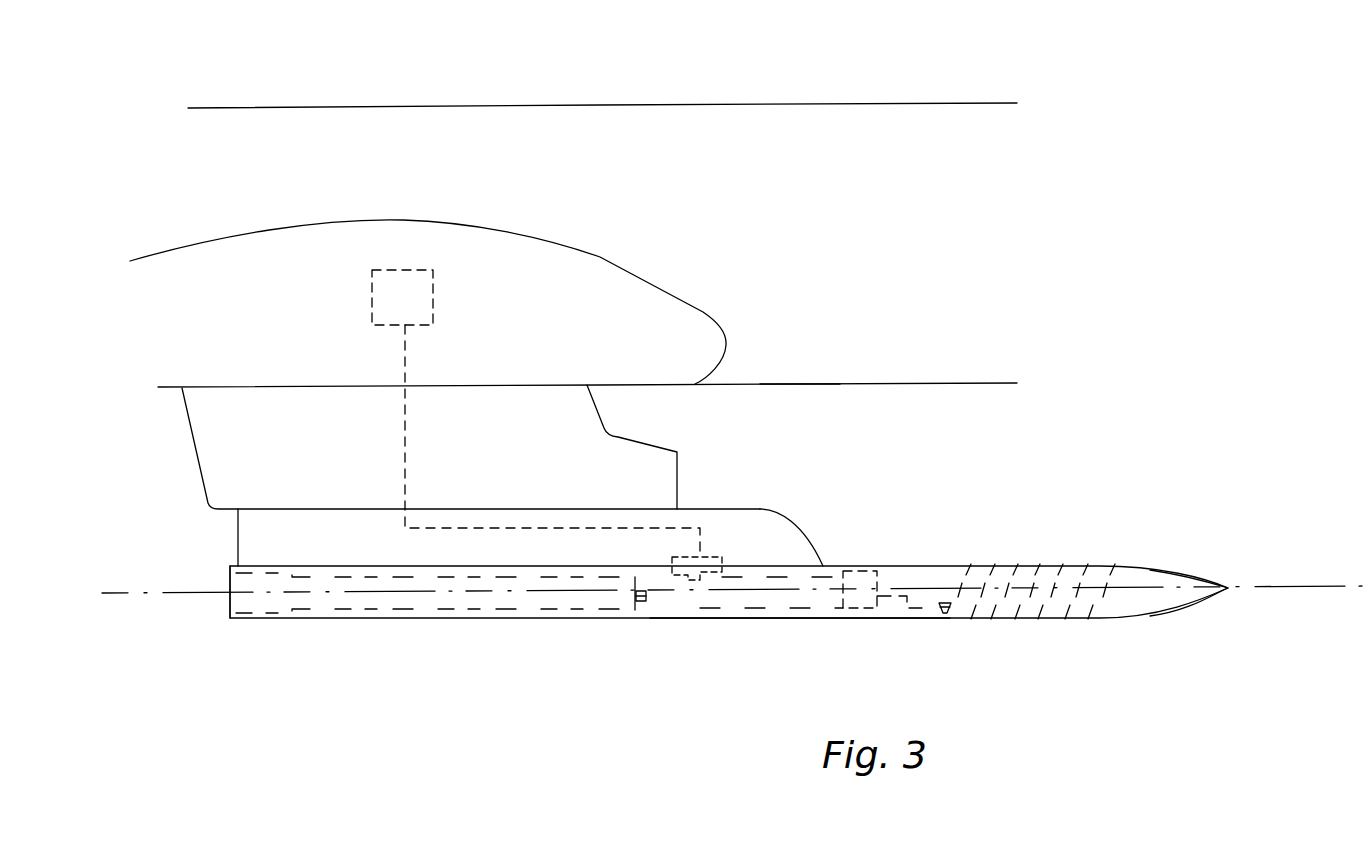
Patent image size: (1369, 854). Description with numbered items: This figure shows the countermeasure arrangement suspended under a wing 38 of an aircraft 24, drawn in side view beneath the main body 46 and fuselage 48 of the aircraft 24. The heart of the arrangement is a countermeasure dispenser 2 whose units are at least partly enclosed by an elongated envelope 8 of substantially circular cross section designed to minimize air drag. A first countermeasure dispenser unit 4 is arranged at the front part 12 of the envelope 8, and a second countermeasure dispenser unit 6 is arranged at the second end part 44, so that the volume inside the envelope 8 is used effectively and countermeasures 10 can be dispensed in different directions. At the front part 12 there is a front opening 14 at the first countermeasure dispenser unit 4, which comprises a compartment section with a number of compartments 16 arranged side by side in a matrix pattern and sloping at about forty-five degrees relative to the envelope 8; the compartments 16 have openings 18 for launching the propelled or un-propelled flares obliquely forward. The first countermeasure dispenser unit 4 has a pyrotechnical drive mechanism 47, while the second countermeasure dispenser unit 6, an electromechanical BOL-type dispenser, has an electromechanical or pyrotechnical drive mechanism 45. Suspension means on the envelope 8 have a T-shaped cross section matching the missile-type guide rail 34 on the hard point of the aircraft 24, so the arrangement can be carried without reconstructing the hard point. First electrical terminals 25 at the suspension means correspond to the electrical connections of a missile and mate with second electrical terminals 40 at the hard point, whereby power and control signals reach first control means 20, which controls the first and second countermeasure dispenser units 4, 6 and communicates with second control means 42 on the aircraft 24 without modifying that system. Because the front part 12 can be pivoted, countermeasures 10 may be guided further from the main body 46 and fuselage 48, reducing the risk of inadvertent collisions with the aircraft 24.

The countermeasure dispenser 2 is at (307, 576).
The first countermeasure dispenser unit 4 is at (1080, 620).
The second countermeasure dispenser unit 6 is at (305, 620).
The envelope 8 is at (800, 618).
The countermeasures 10 is at (1028, 620).
The front part 12 is at (1205, 628).
The front opening 14 is at (1003, 564).
The compartments 16 is at (980, 621).
The openings 18 is at (1053, 564).
The first control means 20 is at (860, 571).
The aircraft 24 is at (985, 384).
The first electrical terminals 25 is at (690, 575).
The guide rail 34 is at (783, 542).
The wing 38 is at (655, 282).
The second electrical terminals 40 is at (708, 555).
The second control means 42 is at (463, 263).
The second end part 44 is at (231, 647).
The electromechanical or pyrotechnical drive mechanism 45 is at (640, 610).
The main body 46 is at (800, 384).
The pyrotechnical drive mechanism 47 is at (943, 617).
The fuselage 48 is at (970, 104).